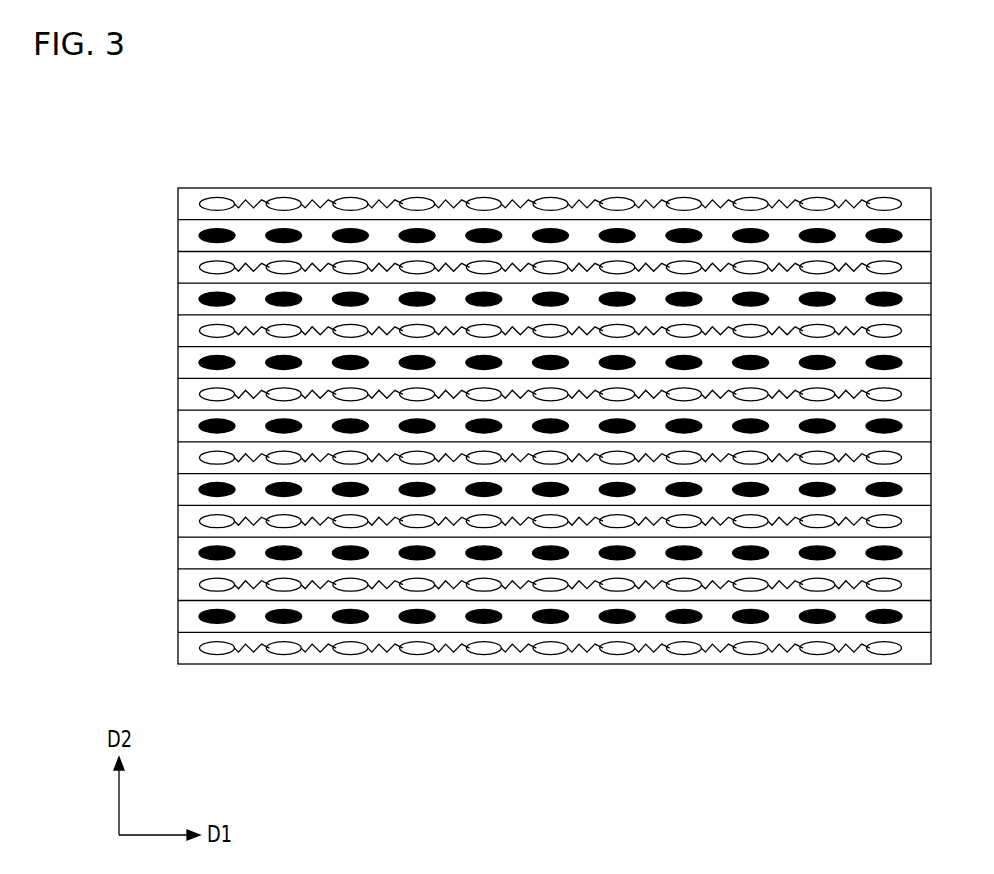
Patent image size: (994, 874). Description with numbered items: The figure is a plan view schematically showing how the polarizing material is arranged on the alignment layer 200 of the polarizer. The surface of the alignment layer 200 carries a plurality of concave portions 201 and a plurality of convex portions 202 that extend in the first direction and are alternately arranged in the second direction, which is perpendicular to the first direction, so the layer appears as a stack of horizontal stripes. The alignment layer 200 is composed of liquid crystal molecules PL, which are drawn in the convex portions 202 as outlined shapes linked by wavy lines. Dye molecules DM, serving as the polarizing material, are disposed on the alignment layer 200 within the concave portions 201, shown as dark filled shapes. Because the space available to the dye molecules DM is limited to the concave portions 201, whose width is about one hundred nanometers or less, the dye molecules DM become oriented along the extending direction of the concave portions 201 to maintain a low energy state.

The alignment layer 200 is at (520, 187).
The liquid crystal molecules PL is at (200, 198).
The dye molecules DM is at (203, 231).
The convex portions 202 is at (185, 456).
The concave portions 201 is at (185, 489).